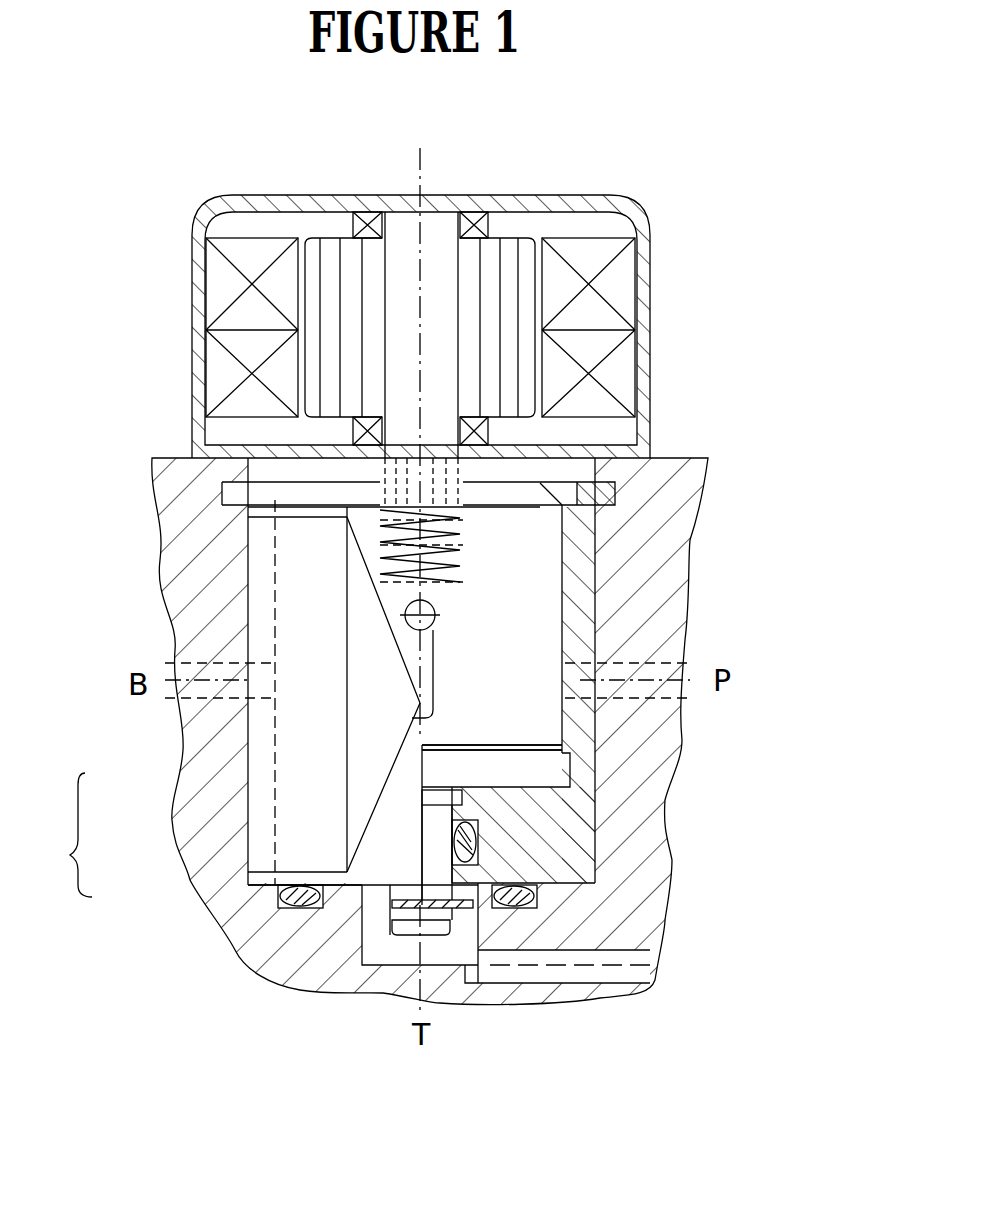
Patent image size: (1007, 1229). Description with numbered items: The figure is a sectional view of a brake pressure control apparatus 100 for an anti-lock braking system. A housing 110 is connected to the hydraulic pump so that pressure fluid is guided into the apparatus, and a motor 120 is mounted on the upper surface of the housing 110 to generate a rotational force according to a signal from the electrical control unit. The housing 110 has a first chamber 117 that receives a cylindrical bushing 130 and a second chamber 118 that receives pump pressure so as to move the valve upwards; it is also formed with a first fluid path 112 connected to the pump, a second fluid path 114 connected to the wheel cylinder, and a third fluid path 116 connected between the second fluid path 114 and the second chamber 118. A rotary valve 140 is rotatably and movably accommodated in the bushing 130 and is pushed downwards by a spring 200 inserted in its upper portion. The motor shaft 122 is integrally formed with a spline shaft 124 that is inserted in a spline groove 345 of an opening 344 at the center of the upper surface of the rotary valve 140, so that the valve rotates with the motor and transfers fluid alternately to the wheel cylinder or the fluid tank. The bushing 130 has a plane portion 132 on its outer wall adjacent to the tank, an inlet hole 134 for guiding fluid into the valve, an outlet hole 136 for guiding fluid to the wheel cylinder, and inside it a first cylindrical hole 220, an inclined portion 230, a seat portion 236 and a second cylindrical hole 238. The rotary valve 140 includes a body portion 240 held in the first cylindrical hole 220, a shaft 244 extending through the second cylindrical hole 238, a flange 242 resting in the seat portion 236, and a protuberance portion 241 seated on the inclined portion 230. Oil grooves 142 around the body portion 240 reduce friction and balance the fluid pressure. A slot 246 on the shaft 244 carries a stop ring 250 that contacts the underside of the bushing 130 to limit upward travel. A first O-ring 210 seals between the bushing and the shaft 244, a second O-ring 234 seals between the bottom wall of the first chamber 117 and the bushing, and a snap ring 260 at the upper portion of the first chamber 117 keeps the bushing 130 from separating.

The brake pressure control apparatus 100 is at (740, 270).
The housing 110 is at (685, 497).
The first fluid path 112 is at (680, 692).
The second fluid path 114 is at (165, 712).
The third fluid path 116 is at (585, 972).
The first chamber 117 is at (258, 472).
The second chamber 118 is at (400, 948).
The motor 120 is at (650, 258).
The motor shaft 122 is at (405, 302).
The spline shaft 124 is at (365, 470).
The bushing 130 is at (580, 742).
The plane portion 132 is at (357, 718).
The inlet hole 134 is at (562, 683).
The outlet hole 136 is at (275, 655).
The rotary valve 140 is at (70, 855).
The oil grooves 142 is at (517, 563).
The spring 200 is at (375, 553).
The first O-ring 210 is at (560, 875).
The first cylindrical hole 220 is at (563, 720).
The inclined portion 230 is at (597, 813).
The second O-ring 234 is at (240, 908).
The seat portion 236 is at (480, 838).
The second cylindrical hole 238 is at (472, 908).
The body portion 240 is at (437, 733).
The protuberance portion 241 is at (455, 765).
The flange 242 is at (445, 792).
The shaft 244 is at (430, 832).
The slot 246 is at (333, 1002).
The stop ring 250 is at (245, 962).
The snap ring 260 is at (603, 472).
The opening 344 is at (465, 556).
The spline groove 345 is at (465, 522).